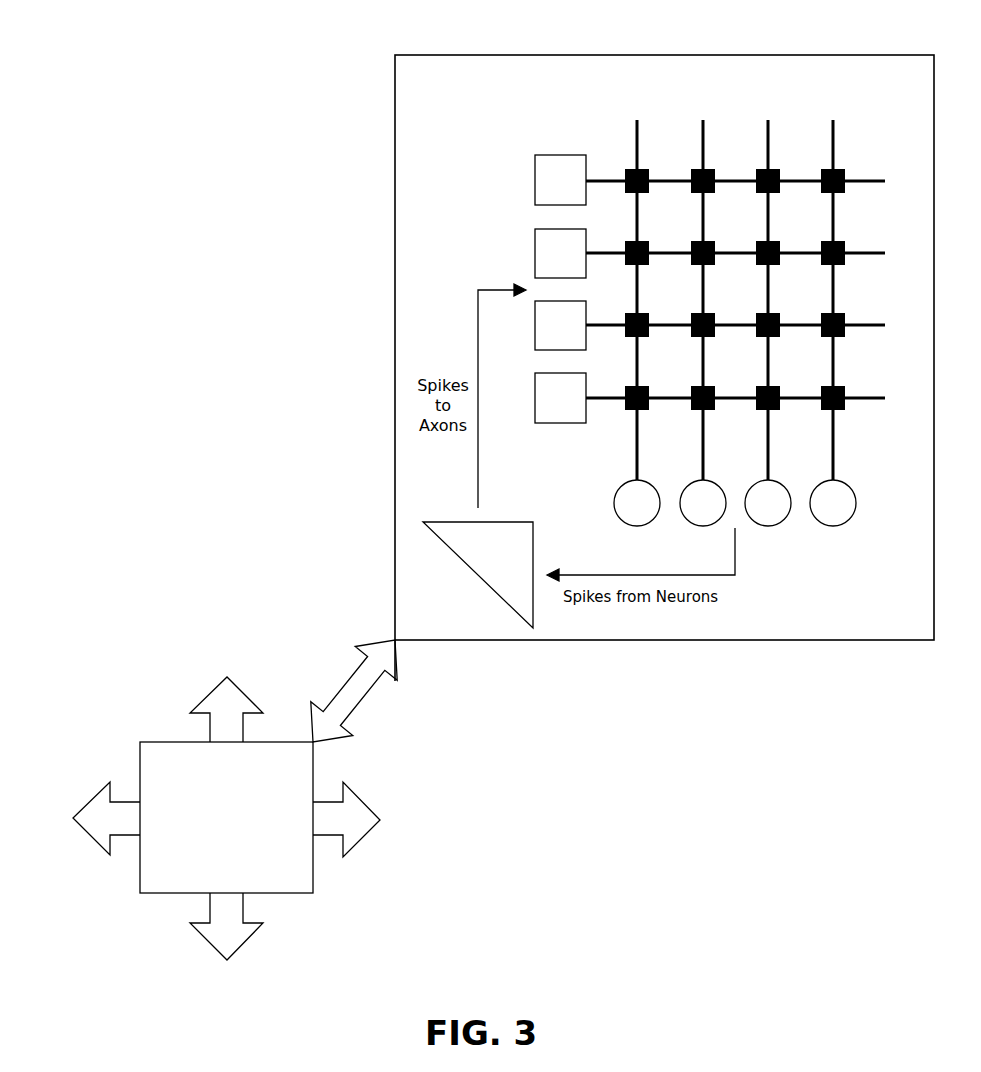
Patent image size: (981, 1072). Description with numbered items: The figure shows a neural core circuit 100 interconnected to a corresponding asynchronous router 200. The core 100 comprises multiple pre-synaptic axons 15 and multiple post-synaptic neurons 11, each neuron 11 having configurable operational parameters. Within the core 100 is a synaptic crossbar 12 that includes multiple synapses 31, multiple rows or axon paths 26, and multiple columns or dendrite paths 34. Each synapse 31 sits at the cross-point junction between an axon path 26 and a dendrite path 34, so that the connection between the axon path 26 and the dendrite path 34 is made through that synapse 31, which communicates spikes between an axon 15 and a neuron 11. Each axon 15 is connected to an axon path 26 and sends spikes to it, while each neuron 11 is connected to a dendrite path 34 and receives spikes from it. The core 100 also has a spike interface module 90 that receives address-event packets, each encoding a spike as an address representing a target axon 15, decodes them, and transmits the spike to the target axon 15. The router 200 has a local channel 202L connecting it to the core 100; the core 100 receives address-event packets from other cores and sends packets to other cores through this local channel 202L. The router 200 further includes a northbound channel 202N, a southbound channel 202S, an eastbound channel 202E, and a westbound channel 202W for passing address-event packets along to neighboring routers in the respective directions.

The neural core circuit 100 is at (853, 55).
The synaptic crossbar 12 is at (701, 301).
The pre-synaptic axon 15 is at (535, 182).
The dendrite path 34 is at (705, 146).
The synapse 31 is at (840, 168).
The axon path 26 is at (866, 396).
The post-synaptic neuron 11 is at (857, 503).
The spike interface module 90 is at (505, 521).
The asynchronous router 200 is at (140, 742).
The northbound channel 202N is at (208, 695).
The westbound channel 202W is at (95, 843).
The eastbound channel 202E is at (370, 833).
The southbound channel 202S is at (245, 940).
The local channel 202L is at (366, 702).